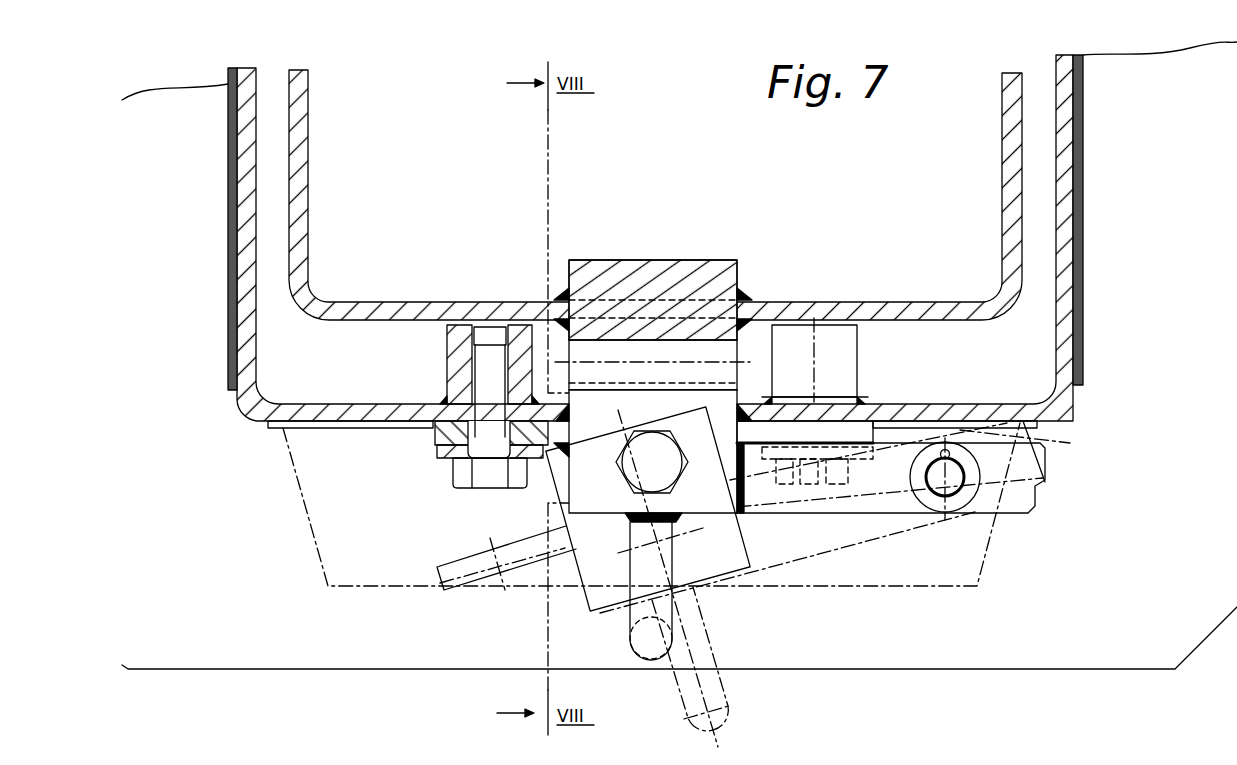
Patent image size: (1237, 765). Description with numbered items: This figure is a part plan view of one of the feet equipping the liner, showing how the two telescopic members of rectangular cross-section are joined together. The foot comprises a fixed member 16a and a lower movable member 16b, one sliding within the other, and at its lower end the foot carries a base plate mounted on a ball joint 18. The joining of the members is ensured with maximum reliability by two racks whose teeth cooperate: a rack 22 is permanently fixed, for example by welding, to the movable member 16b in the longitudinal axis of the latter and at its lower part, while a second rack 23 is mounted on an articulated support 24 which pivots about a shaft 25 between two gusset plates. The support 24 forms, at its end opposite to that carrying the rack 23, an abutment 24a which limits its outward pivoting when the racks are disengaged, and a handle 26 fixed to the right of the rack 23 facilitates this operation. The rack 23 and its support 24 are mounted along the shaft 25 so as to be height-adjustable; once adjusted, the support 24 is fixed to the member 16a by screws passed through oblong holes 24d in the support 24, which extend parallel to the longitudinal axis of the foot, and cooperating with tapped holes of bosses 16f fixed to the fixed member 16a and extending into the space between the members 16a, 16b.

The telescopic member 16a is at (1066, 257).
The telescopic member 16b is at (1004, 188).
The boss 16f is at (458, 383).
The ball joint 18 is at (455, 473).
The rack 22 is at (703, 325).
The rack 23 is at (583, 430).
The articulated support 24 is at (798, 540).
The abutment 24a is at (1007, 423).
The hole 24d is at (437, 440).
The shaft 25 is at (955, 478).
The handle 26 is at (653, 644).